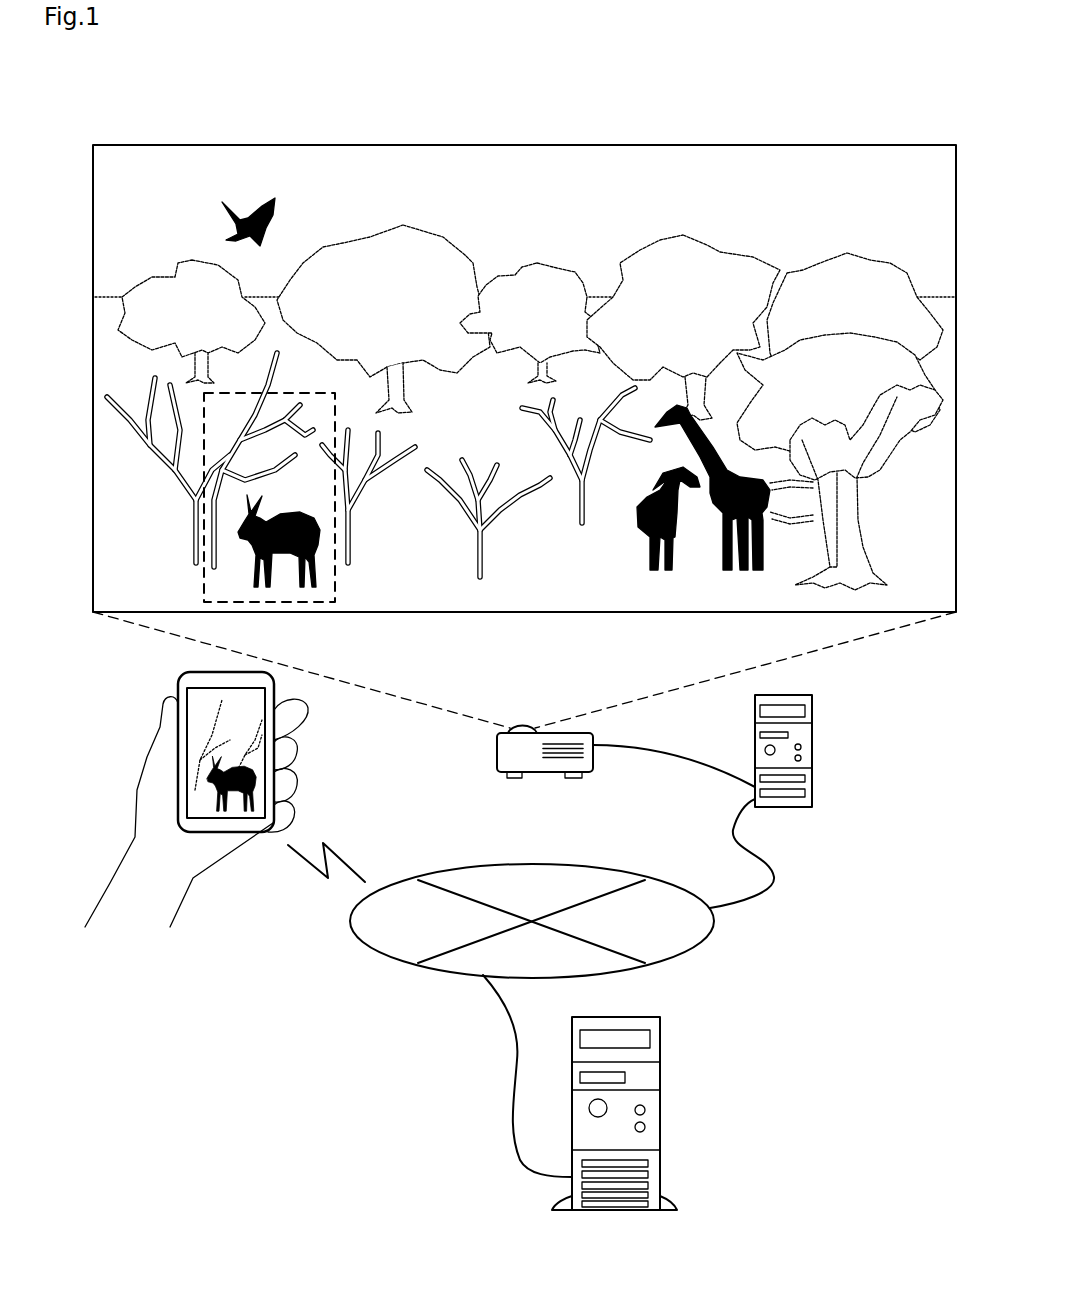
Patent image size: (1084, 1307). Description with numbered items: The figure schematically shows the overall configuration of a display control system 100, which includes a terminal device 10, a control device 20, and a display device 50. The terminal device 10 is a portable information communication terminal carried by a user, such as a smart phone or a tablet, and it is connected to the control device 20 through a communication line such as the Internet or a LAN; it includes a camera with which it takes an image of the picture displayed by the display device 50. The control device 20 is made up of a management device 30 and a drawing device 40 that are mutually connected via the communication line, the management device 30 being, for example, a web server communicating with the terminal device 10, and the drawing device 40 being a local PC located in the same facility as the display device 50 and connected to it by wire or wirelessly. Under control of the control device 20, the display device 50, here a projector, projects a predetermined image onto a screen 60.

The display control system 100 is at (229, 1107).
The terminal device 10 is at (176, 679).
The control device 20 is at (925, 705).
The management device 30 is at (670, 1062).
The drawing device 40 is at (821, 719).
The display device 50 is at (491, 754).
The screen 60 is at (906, 140).